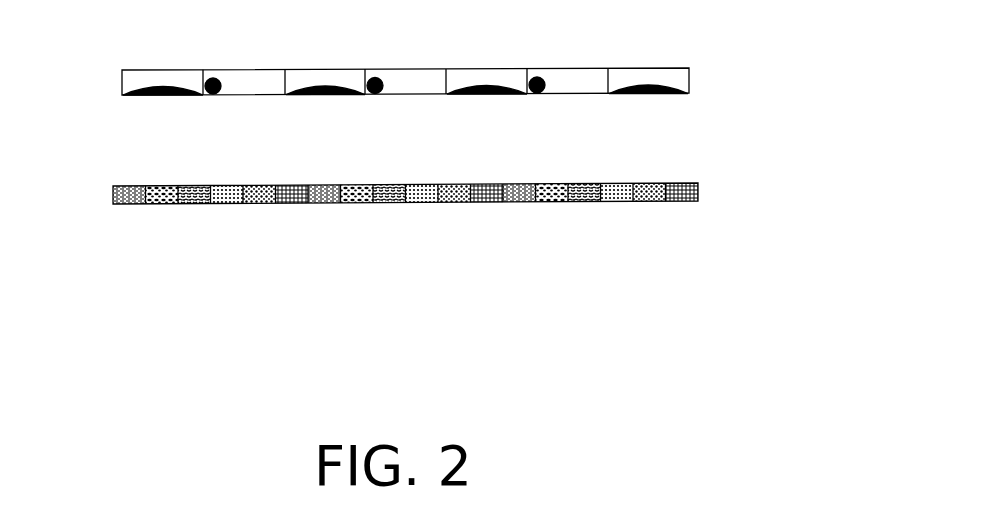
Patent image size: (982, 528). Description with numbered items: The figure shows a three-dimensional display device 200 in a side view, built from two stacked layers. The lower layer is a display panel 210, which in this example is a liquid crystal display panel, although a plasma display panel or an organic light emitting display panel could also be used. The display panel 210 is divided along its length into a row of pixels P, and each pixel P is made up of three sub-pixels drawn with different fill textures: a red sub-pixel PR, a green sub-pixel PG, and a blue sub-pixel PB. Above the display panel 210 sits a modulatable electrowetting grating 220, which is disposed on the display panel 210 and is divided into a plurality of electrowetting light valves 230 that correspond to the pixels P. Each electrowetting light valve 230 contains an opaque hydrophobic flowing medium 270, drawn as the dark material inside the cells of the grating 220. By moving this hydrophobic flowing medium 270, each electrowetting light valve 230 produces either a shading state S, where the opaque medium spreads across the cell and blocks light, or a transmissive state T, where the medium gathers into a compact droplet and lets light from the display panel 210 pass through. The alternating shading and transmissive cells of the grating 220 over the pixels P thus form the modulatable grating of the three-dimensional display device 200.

The three-dimensional display device 200 is at (818, 80).
The display panel 210 is at (698, 191).
The modulatable electrowetting grating 220 is at (689, 80).
The electrowetting light valve 230 is at (285, 57).
The opaque hydrophobic flowing medium 270 is at (487, 86).
The shading state S is at (167, 98).
The transmissive state T is at (241, 97).
The pixel P is at (165, 224).
The red sub-pixel PR is at (326, 205).
The green sub-pixel PG is at (357, 205).
The blue sub-pixel PB is at (389, 205).